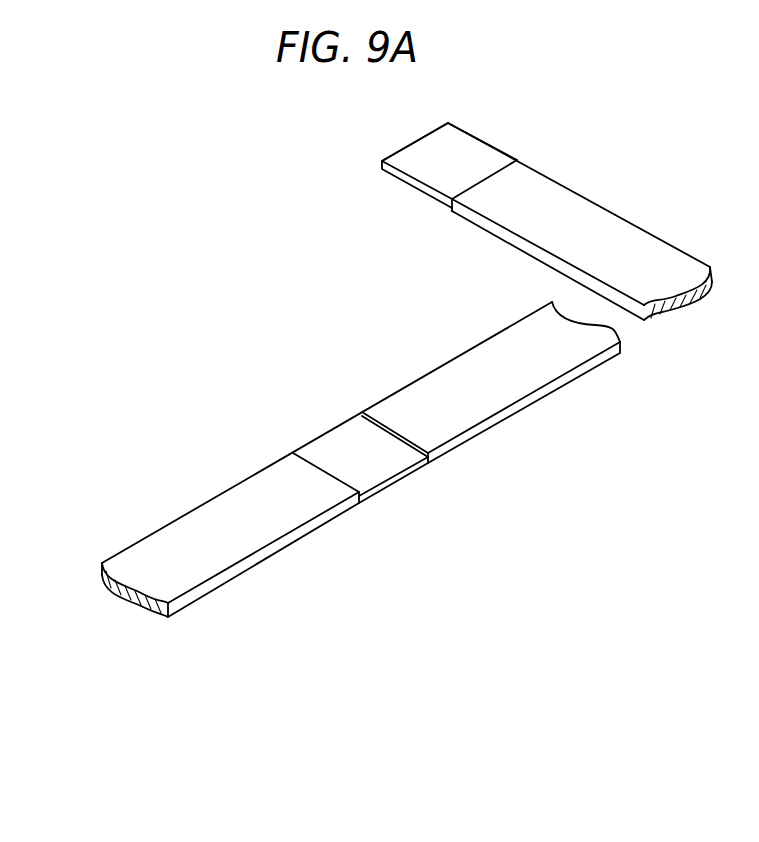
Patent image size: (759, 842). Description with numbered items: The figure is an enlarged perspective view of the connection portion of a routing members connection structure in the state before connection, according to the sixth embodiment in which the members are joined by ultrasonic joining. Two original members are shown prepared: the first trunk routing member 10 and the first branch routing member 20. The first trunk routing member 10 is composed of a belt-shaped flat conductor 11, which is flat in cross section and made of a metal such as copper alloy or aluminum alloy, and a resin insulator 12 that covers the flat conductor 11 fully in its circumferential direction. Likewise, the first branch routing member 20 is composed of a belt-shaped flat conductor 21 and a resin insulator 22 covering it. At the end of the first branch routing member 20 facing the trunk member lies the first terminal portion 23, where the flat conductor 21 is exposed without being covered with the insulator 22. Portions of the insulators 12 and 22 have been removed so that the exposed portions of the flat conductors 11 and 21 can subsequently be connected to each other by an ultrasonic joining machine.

The first trunk routing member 10 is at (361, 485).
The flat conductor 11 is at (310, 452).
The insulator 12 is at (218, 518).
The first branch routing member 20 is at (517, 197).
The flat conductor 21 is at (458, 122).
The insulator 22 is at (657, 238).
The first terminal portion 23 is at (410, 163).